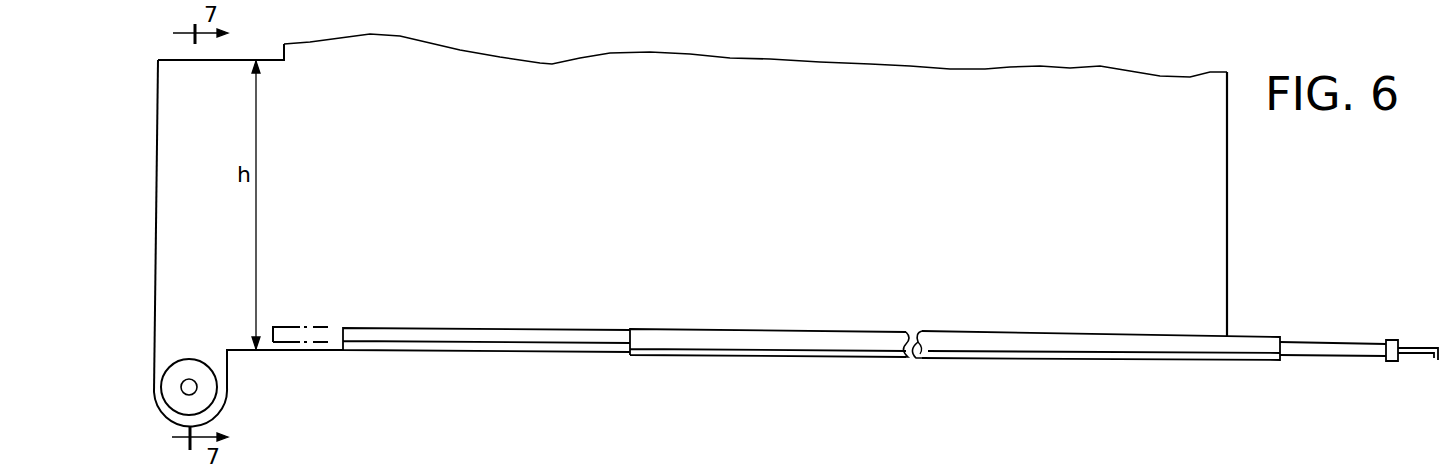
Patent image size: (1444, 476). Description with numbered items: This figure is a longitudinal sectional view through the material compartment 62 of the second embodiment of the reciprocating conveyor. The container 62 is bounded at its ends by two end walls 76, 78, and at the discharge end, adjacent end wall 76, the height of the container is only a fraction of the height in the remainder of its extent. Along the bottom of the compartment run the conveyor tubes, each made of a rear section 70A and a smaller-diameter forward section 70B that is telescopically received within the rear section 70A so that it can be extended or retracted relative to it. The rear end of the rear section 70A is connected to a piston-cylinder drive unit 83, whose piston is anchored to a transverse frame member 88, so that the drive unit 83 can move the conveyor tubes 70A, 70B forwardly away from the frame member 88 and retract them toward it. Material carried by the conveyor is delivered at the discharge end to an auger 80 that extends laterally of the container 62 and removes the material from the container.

The material compartment 62 is at (715, 70).
The rear section 70A is at (768, 340).
The forward section 70B is at (530, 330).
The end wall 76 is at (157, 90).
The end wall 78 is at (1228, 178).
The auger 80 is at (191, 368).
The drive unit 83 is at (1331, 345).
The transverse frame member 88 is at (1420, 346).